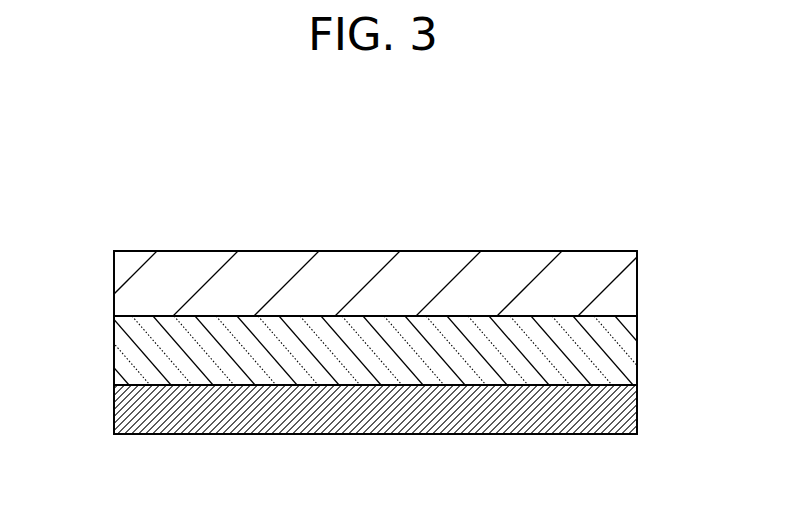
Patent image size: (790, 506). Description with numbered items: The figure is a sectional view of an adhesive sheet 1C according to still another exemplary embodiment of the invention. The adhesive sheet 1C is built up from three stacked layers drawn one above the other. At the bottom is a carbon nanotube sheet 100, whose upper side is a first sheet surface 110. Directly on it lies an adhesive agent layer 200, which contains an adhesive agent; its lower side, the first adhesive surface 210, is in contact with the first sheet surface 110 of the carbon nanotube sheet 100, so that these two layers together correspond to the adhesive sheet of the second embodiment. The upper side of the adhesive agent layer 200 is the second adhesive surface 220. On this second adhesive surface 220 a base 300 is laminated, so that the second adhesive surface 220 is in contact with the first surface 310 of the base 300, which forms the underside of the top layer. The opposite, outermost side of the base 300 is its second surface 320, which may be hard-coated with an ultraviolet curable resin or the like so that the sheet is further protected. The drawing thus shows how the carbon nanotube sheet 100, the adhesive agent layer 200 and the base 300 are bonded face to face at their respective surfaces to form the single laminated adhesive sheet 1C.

The adhesive sheet 1C is at (540, 153).
The carbon nanotube sheet 100 is at (622, 412).
The first sheet surface 110 is at (150, 385).
The adhesive agent layer 200 is at (620, 352).
The first adhesive surface 210 is at (142, 385).
The second adhesive surface 220 is at (150, 316).
The base 300 is at (620, 283).
The first surface of the base 310 is at (142, 316).
The second surface of the base 320 is at (193, 251).